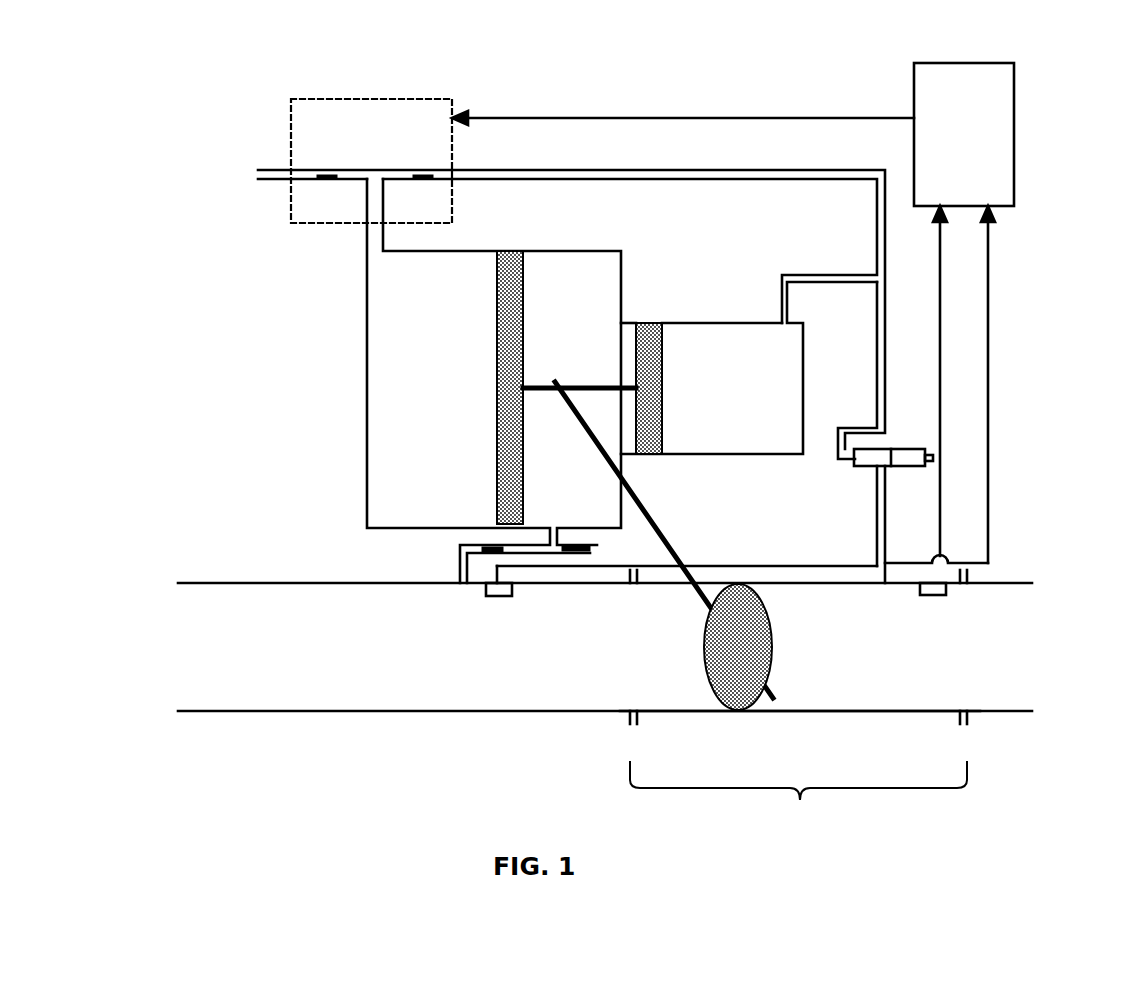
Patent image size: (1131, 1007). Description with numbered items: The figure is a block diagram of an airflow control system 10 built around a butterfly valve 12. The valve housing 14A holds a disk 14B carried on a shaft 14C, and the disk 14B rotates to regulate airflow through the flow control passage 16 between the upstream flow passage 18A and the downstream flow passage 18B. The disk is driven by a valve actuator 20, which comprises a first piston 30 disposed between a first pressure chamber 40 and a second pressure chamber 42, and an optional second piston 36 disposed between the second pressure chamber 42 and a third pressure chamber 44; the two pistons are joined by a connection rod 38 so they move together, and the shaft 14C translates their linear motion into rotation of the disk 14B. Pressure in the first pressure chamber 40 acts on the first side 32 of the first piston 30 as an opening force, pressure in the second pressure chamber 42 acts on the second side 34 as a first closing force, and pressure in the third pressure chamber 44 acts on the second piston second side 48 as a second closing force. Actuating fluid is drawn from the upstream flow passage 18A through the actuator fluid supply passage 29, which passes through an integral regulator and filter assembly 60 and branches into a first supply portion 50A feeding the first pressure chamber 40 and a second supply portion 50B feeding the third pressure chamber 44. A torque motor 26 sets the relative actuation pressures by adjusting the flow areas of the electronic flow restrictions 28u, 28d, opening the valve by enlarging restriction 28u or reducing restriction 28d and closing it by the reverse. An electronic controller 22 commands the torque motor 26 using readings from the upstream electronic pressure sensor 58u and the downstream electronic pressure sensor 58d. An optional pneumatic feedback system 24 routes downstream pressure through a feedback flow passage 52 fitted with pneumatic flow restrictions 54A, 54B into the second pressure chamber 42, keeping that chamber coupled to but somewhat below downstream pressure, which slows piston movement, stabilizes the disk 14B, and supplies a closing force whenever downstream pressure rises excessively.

The airflow control system 10 is at (282, 60).
The butterfly valve 12 is at (585, 733).
The valve housing 14A is at (832, 712).
The disk 14B is at (770, 615).
The shaft 14C is at (650, 510).
The flow control passage 16 is at (798, 798).
The upstream flow passage 18A is at (1000, 680).
The downstream flow passage 18B is at (459, 693).
The valve actuator 20 is at (260, 310).
The electronic controller 22 is at (975, 117).
The pneumatic feedback system 24 is at (415, 550).
The torque motor 26 is at (388, 102).
The electronic flow restriction 28d is at (327, 175).
The electronic flow restriction 28u is at (421, 175).
The actuator fluid supply passage 29 is at (845, 532).
The first piston 30 is at (510, 251).
The first side 32 is at (497, 357).
The second side 34 is at (523, 325).
The second piston 36 is at (648, 323).
The connection rod 38 is at (590, 387).
The first pressure chamber 40 is at (378, 445).
The second pressure chamber 42 is at (607, 270).
The third pressure chamber 44 is at (790, 398).
The second piston second side 48 is at (665, 392).
The first supply portion 50A is at (790, 182).
The second supply portion 50B is at (843, 273).
The feedback flow passage 52 is at (462, 565).
The pneumatic flow restriction 54A is at (490, 545).
The pneumatic flow restriction 54B is at (580, 553).
The downstream electronic pressure sensor 58d is at (500, 596).
The upstream electronic pressure sensor 58u is at (933, 596).
The integral regulator and filter assembly 60 is at (908, 438).